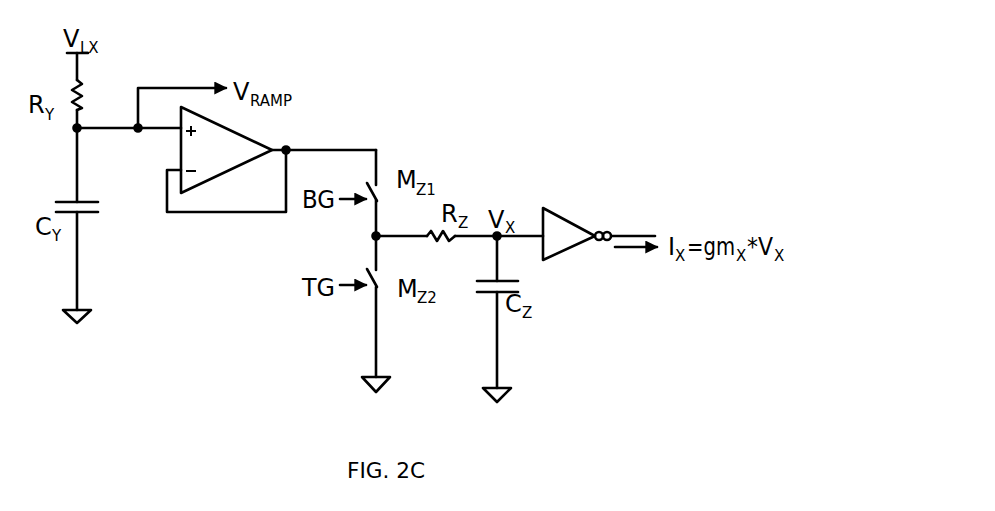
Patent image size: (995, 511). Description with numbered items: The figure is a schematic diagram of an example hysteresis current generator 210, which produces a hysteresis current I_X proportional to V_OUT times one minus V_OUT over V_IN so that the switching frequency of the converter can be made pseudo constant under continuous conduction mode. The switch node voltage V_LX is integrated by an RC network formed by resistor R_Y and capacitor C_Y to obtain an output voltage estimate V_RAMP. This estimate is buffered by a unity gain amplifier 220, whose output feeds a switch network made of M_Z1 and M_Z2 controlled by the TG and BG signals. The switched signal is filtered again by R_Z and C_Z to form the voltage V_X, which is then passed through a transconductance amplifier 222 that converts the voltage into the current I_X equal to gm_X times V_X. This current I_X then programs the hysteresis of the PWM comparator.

The hysteresis current generator 210 is at (650, 27).
The unity gain amplifier 220 is at (240, 161).
The transconductance amplifier 222 is at (565, 222).